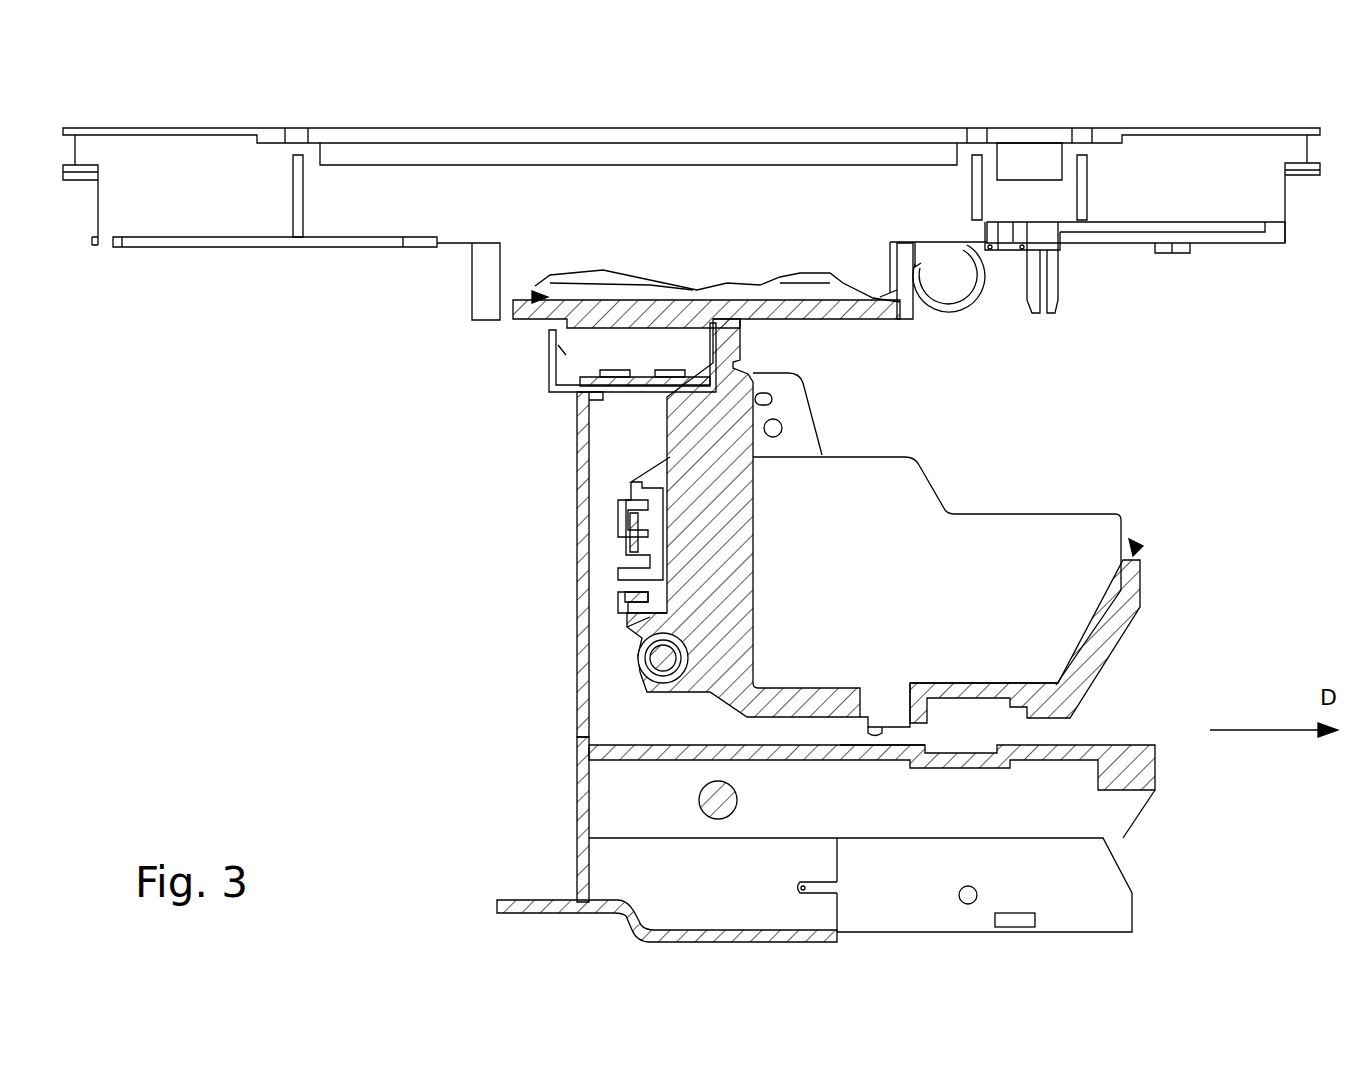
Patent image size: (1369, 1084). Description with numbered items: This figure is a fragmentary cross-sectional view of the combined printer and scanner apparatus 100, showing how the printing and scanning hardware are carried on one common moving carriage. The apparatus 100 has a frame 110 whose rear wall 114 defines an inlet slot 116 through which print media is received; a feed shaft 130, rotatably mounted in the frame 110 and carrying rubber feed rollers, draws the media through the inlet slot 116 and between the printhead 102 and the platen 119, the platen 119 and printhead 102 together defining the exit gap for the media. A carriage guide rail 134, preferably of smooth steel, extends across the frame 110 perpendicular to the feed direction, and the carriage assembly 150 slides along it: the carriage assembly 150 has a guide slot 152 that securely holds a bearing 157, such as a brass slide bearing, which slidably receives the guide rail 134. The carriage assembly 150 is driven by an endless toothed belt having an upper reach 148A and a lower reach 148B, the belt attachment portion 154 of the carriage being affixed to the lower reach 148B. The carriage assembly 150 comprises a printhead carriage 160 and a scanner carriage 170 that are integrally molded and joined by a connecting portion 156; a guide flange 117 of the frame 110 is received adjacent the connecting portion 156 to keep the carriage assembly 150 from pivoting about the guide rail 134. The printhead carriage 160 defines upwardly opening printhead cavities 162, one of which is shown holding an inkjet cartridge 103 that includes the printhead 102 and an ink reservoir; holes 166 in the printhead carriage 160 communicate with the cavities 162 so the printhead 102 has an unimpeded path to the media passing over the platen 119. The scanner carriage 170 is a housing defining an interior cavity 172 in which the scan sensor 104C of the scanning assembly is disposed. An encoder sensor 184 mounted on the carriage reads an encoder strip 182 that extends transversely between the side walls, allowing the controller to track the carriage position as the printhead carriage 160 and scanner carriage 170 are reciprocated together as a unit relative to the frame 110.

The apparatus 100 is at (1086, 114).
The scanner carriage 170 is at (775, 133).
The scan sensor 104C is at (593, 278).
The guide flange 117 is at (708, 323).
The interior cavity 172 is at (535, 297).
The connecting portion 156 is at (735, 349).
The carriage assembly 150 is at (895, 350).
The rear wall 114 is at (577, 460).
The encoder sensor 184 is at (630, 503).
The encoder strip 182 is at (630, 542).
The upper reach 148A is at (623, 552).
The lower reach 148B is at (622, 598).
The belt attachment portion 154 is at (637, 613).
The carriage guide rail 134 is at (655, 658).
The bearing 157 is at (645, 692).
The inlet slot 116 is at (577, 737).
The guide slot 152 is at (673, 690).
The frame 110 is at (577, 801).
The feed shaft 130 is at (712, 808).
The holes 166 is at (855, 742).
The platen 119 is at (880, 736).
The printhead 102 is at (885, 730).
The inkjet cartridge 103 is at (995, 530).
The printhead cavities 162 is at (1136, 548).
The printhead carriage 160 is at (1105, 633).